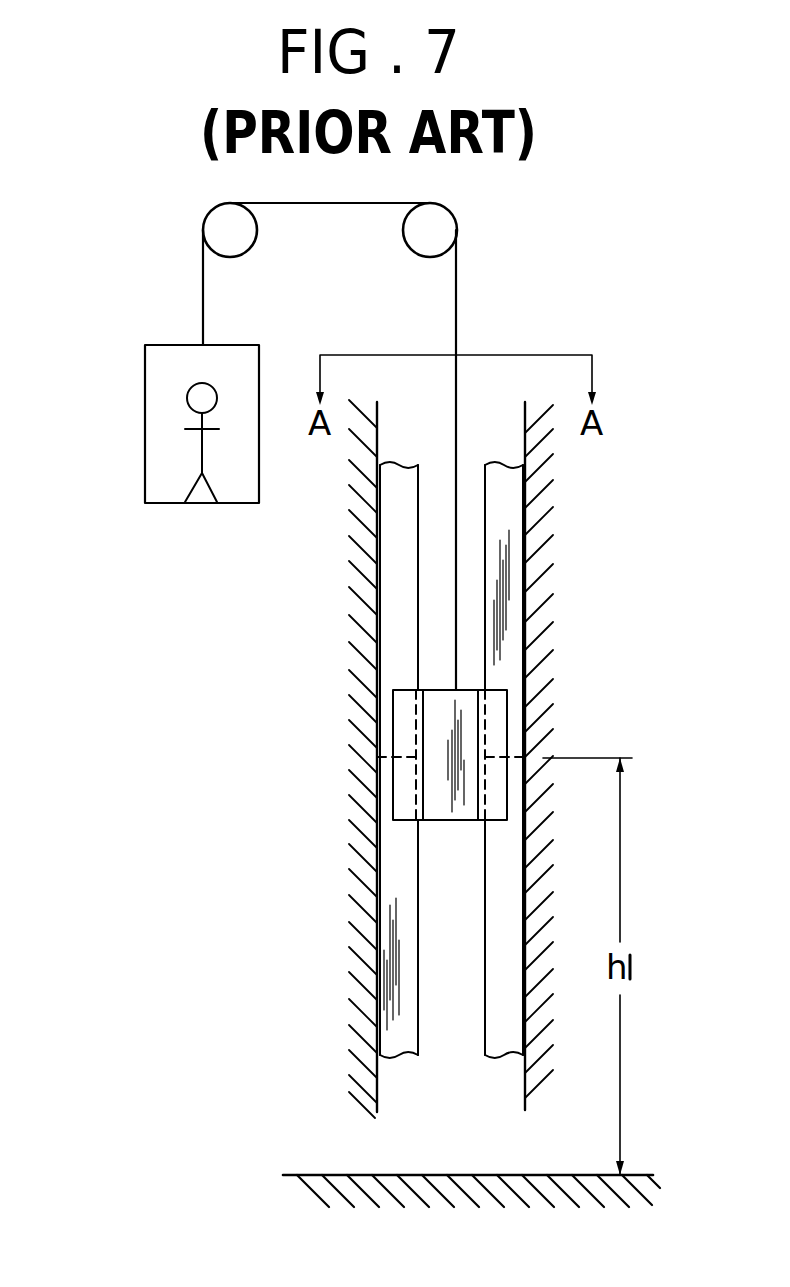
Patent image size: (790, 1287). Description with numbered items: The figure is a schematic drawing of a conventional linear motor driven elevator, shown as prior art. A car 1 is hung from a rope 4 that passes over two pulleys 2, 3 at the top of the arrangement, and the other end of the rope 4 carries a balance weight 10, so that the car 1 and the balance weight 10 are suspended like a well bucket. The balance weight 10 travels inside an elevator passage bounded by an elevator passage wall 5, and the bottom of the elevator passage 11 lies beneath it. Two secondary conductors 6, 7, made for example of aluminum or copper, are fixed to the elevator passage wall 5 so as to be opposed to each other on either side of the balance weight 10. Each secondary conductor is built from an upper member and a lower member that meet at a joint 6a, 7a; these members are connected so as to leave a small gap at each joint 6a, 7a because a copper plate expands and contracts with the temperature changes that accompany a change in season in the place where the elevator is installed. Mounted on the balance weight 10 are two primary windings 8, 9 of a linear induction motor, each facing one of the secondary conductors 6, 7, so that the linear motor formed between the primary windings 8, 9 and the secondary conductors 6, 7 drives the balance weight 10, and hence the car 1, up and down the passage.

The car 1 is at (143, 403).
The pulley 2 is at (248, 252).
The pulley 3 is at (408, 252).
The rope 4 is at (457, 282).
The elevator passage wall 5 is at (379, 504).
The secondary conductor 6 is at (500, 462).
The joint 6a is at (525, 748).
The secondary conductor 7 is at (405, 462).
The joint 7a is at (377, 748).
The primary winding 8 is at (500, 718).
The primary winding 9 is at (398, 702).
The balance weight 10 is at (440, 812).
The bottom of the elevator passage 11 is at (640, 1173).